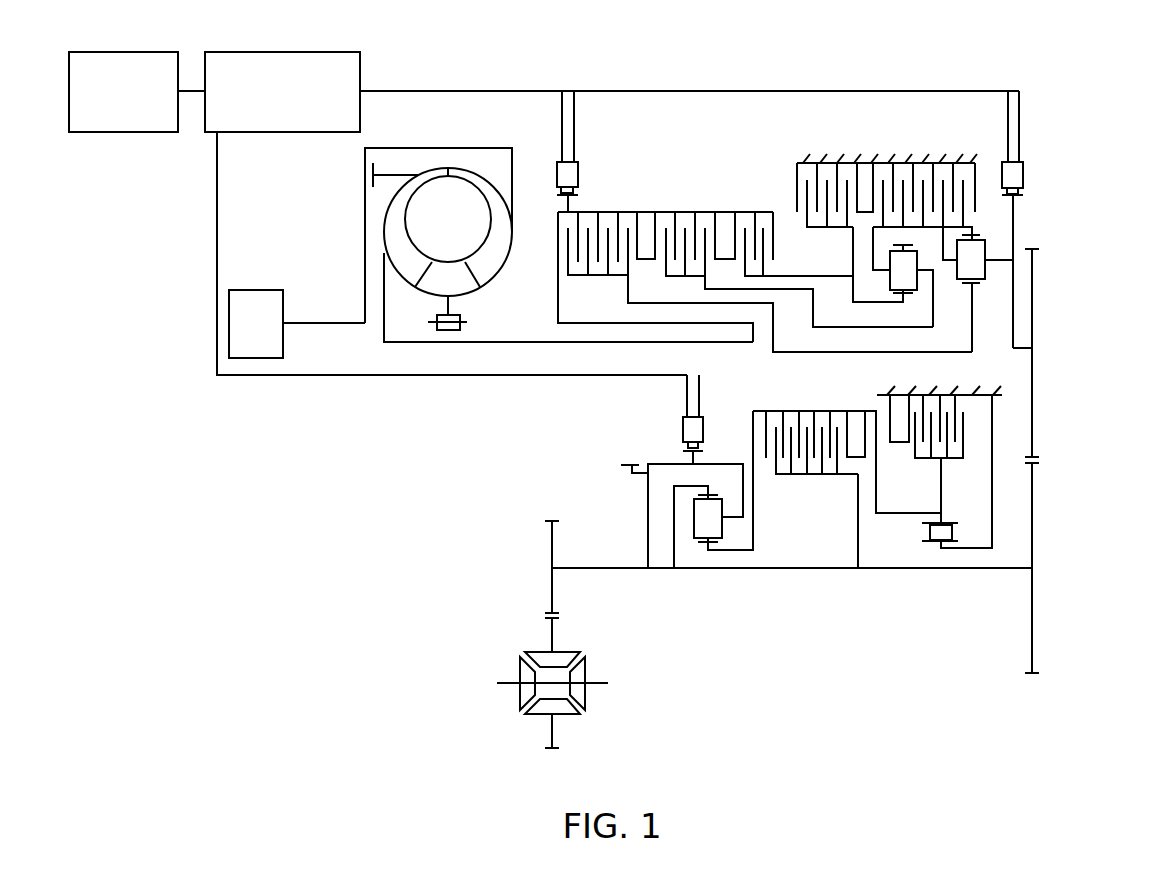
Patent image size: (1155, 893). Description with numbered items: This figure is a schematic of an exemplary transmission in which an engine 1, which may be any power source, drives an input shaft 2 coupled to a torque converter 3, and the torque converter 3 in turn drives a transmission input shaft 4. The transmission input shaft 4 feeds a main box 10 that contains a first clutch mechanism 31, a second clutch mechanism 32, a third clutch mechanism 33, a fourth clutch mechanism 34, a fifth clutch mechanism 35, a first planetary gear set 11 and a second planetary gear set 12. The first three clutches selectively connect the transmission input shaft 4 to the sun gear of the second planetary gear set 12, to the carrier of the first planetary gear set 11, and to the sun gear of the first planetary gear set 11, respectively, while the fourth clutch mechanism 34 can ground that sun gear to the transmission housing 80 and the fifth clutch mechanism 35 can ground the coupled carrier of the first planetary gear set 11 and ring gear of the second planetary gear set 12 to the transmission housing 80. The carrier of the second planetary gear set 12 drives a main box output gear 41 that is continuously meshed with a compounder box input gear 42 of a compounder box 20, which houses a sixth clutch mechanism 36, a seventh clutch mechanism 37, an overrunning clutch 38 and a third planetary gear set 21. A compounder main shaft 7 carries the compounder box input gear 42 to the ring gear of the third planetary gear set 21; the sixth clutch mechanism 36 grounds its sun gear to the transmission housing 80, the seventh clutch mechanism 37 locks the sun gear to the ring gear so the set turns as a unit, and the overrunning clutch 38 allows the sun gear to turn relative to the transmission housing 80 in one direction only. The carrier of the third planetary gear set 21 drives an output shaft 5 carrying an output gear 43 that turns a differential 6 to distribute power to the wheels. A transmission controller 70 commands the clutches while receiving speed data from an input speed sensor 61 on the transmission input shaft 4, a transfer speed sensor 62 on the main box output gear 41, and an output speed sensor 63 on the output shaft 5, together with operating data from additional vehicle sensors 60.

The engine 1 is at (260, 290).
The input shaft 2 is at (325, 321).
The torque converter 3 is at (483, 167).
The transmission input shaft 4 is at (557, 297).
The output shaft 5 is at (612, 570).
The differential 6 is at (578, 728).
The compounder main shaft 7 is at (827, 570).
The main box 10 is at (1092, 223).
The first planetary gear set 11 is at (918, 285).
The second planetary gear set 12 is at (985, 250).
The compounder box 20 is at (1092, 491).
The third planetary gear set 21 is at (724, 525).
The first clutch mechanism 31 is at (600, 226).
The second clutch mechanism 32 is at (688, 226).
The third clutch mechanism 33 is at (750, 226).
The fourth clutch mechanism 34 is at (827, 174).
The fifth clutch mechanism 35 is at (942, 174).
The sixth clutch mechanism 36 is at (947, 412).
The seventh clutch mechanism 37 is at (814, 428).
The overrunning clutch 38 is at (922, 535).
The main box output gear 41 is at (1034, 305).
The compounder box input gear 42 is at (1034, 595).
The output gear 43 is at (550, 549).
The additional vehicle sensors 60 is at (110, 132).
The input speed sensor 61 is at (578, 172).
The transfer speed sensor 62 is at (1023, 172).
The output speed sensor 63 is at (703, 420).
The transmission controller 70 is at (268, 132).
The transmission housing 80 is at (894, 154).